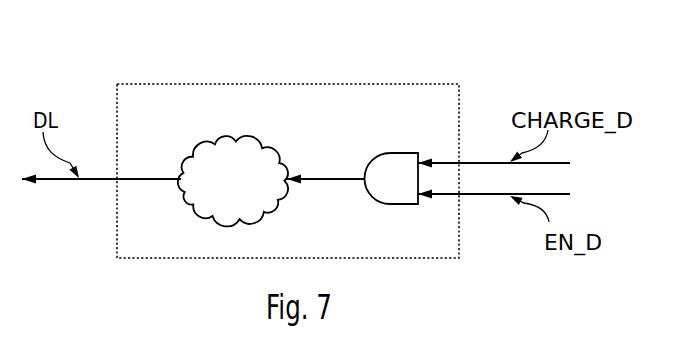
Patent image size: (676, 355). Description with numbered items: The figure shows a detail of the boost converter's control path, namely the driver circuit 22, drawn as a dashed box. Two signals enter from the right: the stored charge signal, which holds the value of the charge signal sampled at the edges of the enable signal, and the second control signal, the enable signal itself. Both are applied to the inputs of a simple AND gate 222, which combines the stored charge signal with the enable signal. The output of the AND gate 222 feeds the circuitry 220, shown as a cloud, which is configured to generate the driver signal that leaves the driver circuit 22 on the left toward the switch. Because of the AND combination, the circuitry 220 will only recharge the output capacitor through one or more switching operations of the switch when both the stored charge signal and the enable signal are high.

The driver circuit 22 is at (185, 82).
The circuitry configured to generate the driver signal DL 220 is at (214, 151).
The AND gate 222 is at (378, 151).